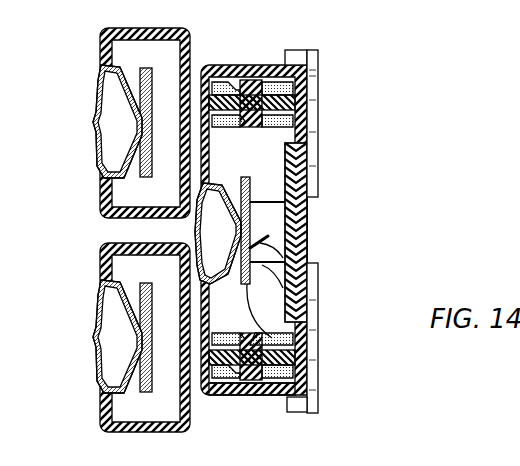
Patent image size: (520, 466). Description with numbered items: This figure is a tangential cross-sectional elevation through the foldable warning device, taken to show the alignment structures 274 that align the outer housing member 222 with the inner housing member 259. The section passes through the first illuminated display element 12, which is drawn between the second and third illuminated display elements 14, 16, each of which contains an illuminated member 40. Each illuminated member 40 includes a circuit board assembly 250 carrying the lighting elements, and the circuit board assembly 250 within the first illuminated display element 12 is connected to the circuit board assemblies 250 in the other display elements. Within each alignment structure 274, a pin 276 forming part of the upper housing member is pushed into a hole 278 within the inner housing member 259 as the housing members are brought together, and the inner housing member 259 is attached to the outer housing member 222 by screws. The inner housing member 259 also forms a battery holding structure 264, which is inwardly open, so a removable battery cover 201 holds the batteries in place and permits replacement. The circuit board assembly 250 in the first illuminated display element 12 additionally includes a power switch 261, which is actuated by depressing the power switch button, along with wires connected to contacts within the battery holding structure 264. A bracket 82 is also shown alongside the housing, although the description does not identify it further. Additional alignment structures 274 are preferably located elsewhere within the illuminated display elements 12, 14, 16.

The first illuminated display element 12 is at (318, 409).
The second illuminated display element 14 is at (97, 274).
The third illuminated display element 16 is at (97, 60).
The illuminated member 40 is at (95, 107).
The mounting bracket 82 is at (312, 173).
The battery cover 201 is at (308, 223).
The outer housing member 222 is at (266, 398).
The circuit board assembly 250 is at (102, 153).
The inner housing member 259 is at (308, 128).
The power switch 261 is at (310, 266).
The battery holding structure 264 is at (300, 303).
The alignment structure 274 is at (273, 87).
The pin 276 is at (250, 93).
The hole 278 is at (258, 92).